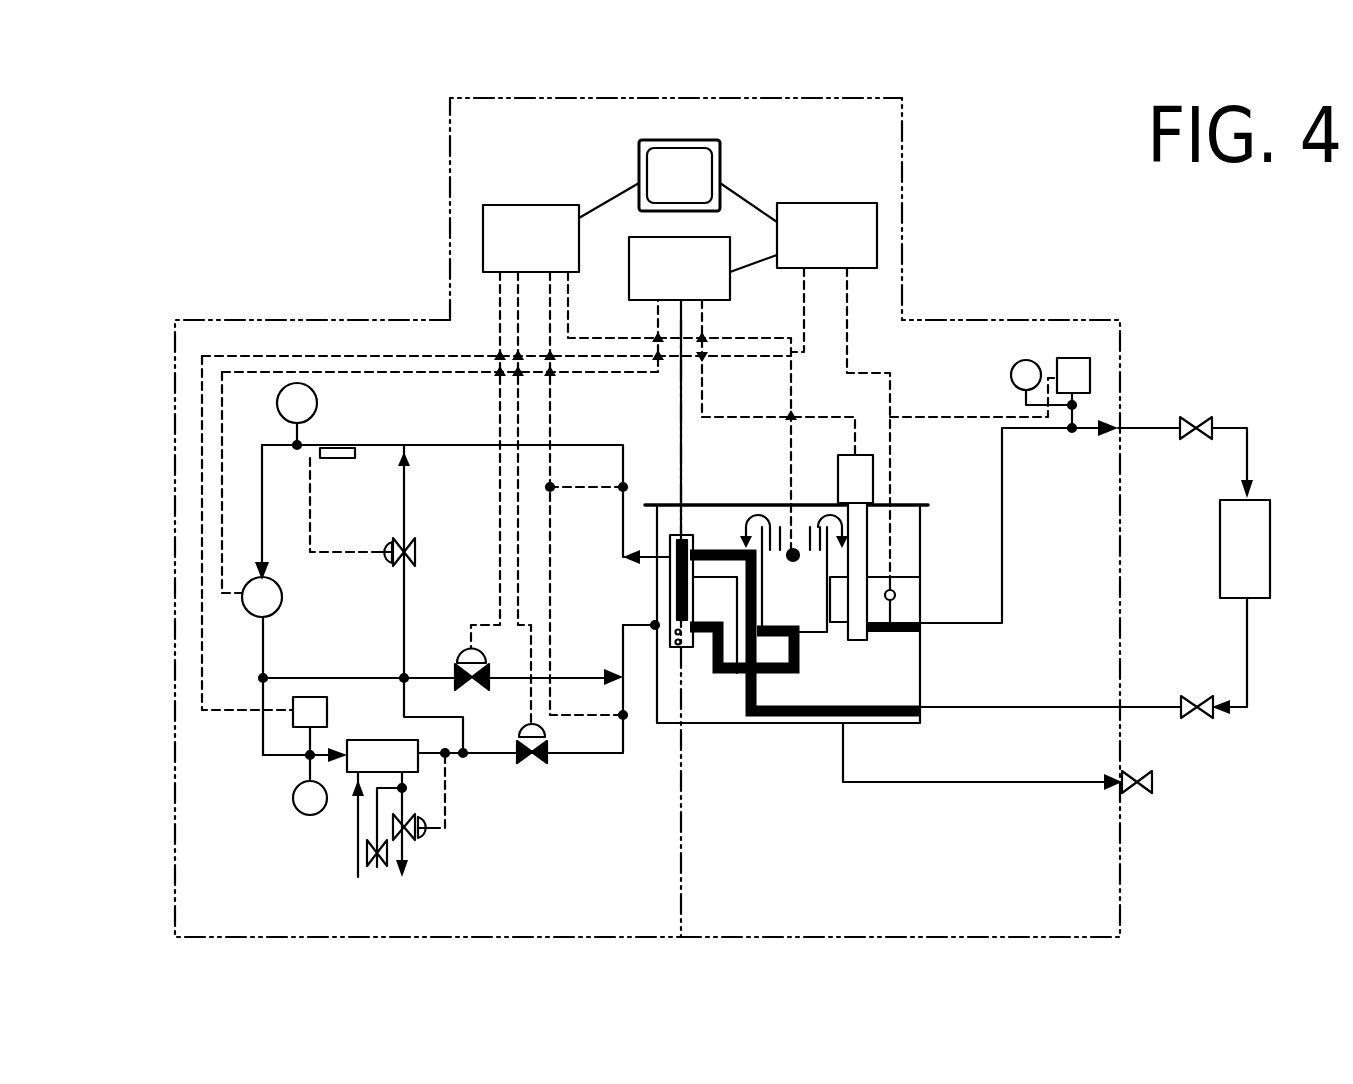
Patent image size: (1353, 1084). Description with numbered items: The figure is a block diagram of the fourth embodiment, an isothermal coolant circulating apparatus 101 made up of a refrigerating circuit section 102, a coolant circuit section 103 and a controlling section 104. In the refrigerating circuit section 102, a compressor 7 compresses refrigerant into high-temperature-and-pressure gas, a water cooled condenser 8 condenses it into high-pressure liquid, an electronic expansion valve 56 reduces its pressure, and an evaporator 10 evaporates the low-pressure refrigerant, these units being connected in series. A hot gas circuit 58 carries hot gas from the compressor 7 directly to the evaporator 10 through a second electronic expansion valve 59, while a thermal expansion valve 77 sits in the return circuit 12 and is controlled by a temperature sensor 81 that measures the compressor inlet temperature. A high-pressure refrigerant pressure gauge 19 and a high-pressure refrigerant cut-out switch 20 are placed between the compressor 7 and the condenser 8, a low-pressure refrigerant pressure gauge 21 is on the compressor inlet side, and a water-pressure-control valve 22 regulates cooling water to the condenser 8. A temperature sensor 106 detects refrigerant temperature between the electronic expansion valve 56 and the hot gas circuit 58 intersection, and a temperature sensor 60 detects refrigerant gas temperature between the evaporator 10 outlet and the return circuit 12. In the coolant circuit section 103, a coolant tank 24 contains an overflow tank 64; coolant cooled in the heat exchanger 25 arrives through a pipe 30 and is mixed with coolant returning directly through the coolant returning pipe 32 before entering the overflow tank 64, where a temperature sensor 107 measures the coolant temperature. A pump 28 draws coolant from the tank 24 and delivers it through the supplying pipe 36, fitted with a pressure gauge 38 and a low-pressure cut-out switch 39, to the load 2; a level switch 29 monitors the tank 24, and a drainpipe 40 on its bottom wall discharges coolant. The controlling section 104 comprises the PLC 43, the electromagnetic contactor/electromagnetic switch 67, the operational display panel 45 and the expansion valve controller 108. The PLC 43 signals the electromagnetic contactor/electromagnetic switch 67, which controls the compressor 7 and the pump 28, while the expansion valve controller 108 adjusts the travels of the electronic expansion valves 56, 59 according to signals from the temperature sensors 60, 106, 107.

The load 2 is at (1256, 568).
The compressor 7 is at (252, 618).
The condenser 8 is at (381, 740).
The evaporator 10 is at (681, 535).
The return circuit 12 is at (404, 637).
The high-pressure refrigerant pressure gauge 19 is at (293, 798).
The high-pressure refrigerant cut-out switch 20 is at (292, 712).
The low-pressure refrigerant pressure gauge 21 is at (317, 401).
The water-pressure-control valve 22 is at (426, 838).
The coolant tank 24 is at (917, 660).
The heat exchanger 25 is at (685, 647).
The pump 28 is at (848, 456).
The level switch 29 is at (897, 598).
The pipe 30 is at (733, 678).
The coolant returning pipe 32 is at (1028, 707).
The supplying pipe 36 is at (1003, 492).
The pressure gauge 38 is at (1025, 360).
The low-pressure cut-out switch 39 is at (1071, 358).
The drainpipe 40 is at (1024, 783).
The PLC 43 is at (848, 258).
The operational display panel 45 is at (700, 198).
The electronic expansion valve 56 is at (532, 763).
The hot gas circuit 58 is at (300, 677).
The electronic expansion valve 59 is at (462, 650).
The temperature sensor 60 is at (621, 489).
The overflow tank 64 is at (790, 540).
The electromagnetic contactor/electromagnetic switch 67 is at (700, 291).
The thermal expansion valve 77 is at (388, 563).
The temperature sensor 81 is at (341, 460).
The isothermal coolant circulating apparatus 101 is at (1085, 140).
The refrigerating circuit section 102 is at (298, 308).
The coolant circuit section 103 is at (1134, 310).
The controlling section 104 is at (912, 196).
The temperature sensor 106 is at (625, 718).
The temperature sensor 107 is at (795, 562).
The expansion valve controller 108 is at (559, 266).